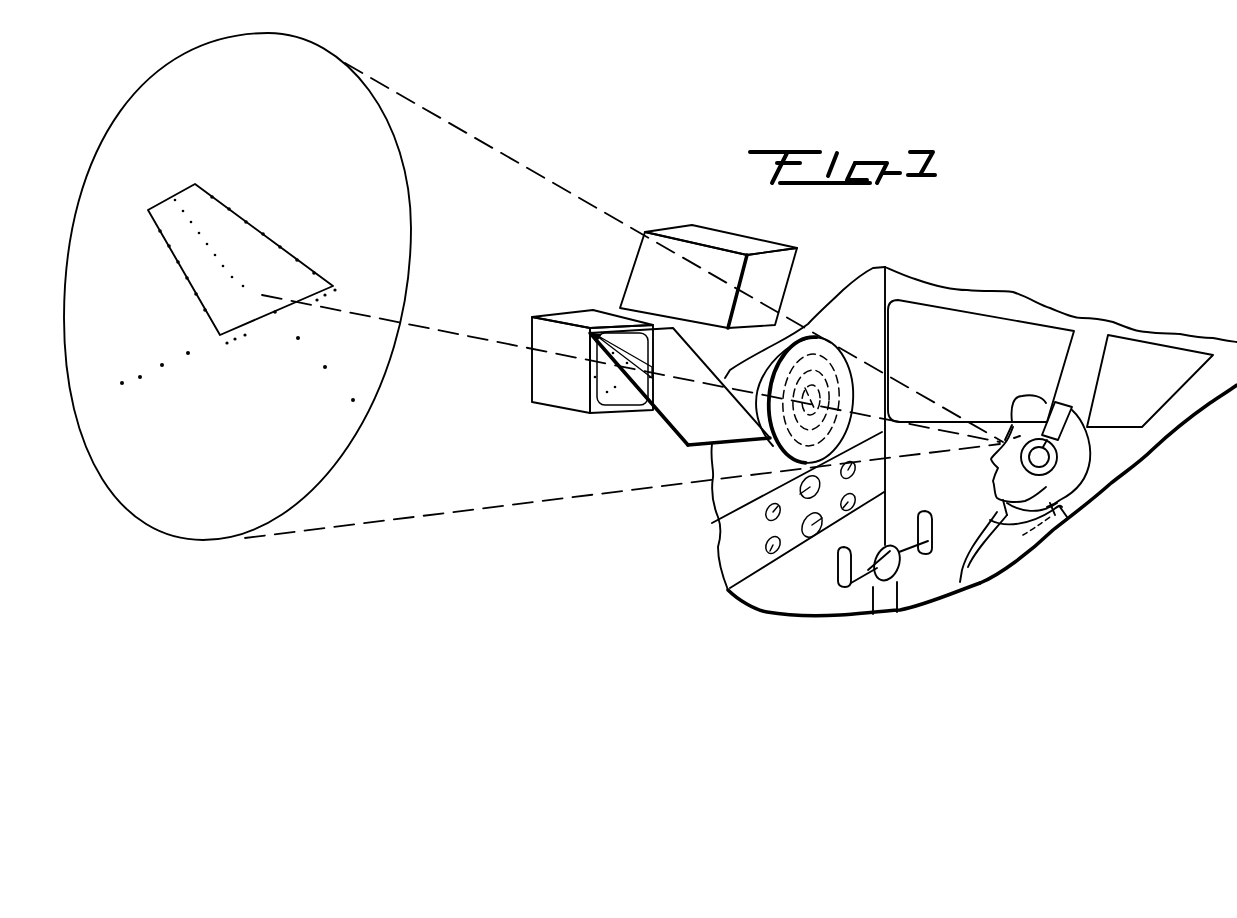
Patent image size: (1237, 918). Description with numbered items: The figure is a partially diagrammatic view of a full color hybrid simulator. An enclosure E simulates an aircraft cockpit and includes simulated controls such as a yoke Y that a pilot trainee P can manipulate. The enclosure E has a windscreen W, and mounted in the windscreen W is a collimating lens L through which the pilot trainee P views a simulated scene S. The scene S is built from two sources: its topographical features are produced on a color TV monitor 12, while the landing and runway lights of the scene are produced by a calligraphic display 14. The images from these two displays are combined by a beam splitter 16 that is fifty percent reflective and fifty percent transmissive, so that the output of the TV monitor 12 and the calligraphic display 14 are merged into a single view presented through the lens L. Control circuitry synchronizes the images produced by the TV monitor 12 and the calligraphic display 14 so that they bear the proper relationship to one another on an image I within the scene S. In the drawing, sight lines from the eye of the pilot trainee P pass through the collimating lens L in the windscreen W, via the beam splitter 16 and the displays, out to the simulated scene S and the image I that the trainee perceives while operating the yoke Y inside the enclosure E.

The simulated scene S is at (412, 212).
The image I is at (182, 268).
The color TV monitor 12 is at (642, 262).
The calligraphic display 14 is at (573, 318).
The beam splitter 16 is at (683, 422).
The collimating lens L is at (820, 337).
The windscreen W is at (870, 270).
The enclosure E is at (932, 298).
The yoke Y is at (838, 581).
The pilot trainee P is at (1023, 537).